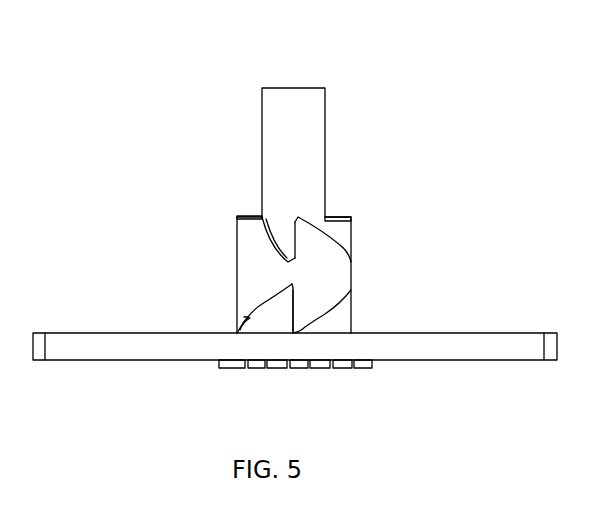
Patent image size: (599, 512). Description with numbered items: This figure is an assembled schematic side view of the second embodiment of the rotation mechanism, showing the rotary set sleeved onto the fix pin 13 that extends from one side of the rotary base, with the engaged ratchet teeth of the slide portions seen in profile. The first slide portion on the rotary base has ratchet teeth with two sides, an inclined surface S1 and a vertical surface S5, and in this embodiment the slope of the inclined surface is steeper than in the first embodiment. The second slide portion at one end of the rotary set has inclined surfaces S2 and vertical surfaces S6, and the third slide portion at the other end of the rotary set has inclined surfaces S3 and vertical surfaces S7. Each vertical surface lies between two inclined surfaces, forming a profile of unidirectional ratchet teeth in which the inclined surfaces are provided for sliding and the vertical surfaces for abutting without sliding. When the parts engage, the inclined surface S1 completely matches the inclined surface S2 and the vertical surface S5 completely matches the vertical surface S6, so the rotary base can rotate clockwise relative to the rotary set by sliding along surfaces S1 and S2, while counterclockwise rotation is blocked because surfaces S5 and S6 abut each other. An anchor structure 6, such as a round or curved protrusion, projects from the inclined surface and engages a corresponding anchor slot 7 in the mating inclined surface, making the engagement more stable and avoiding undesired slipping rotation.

The fix pin 13 is at (300, 83).
The anchor structure 6 is at (318, 318).
The anchor slot 7 is at (320, 313).
The inclined surface S1 is at (257, 315).
The inclined surface S2 is at (257, 297).
The inclined surface S3 is at (312, 222).
The vertical surface S5 is at (290, 297).
The vertical surface S6 is at (296, 290).
The vertical surface S7 is at (291, 220).